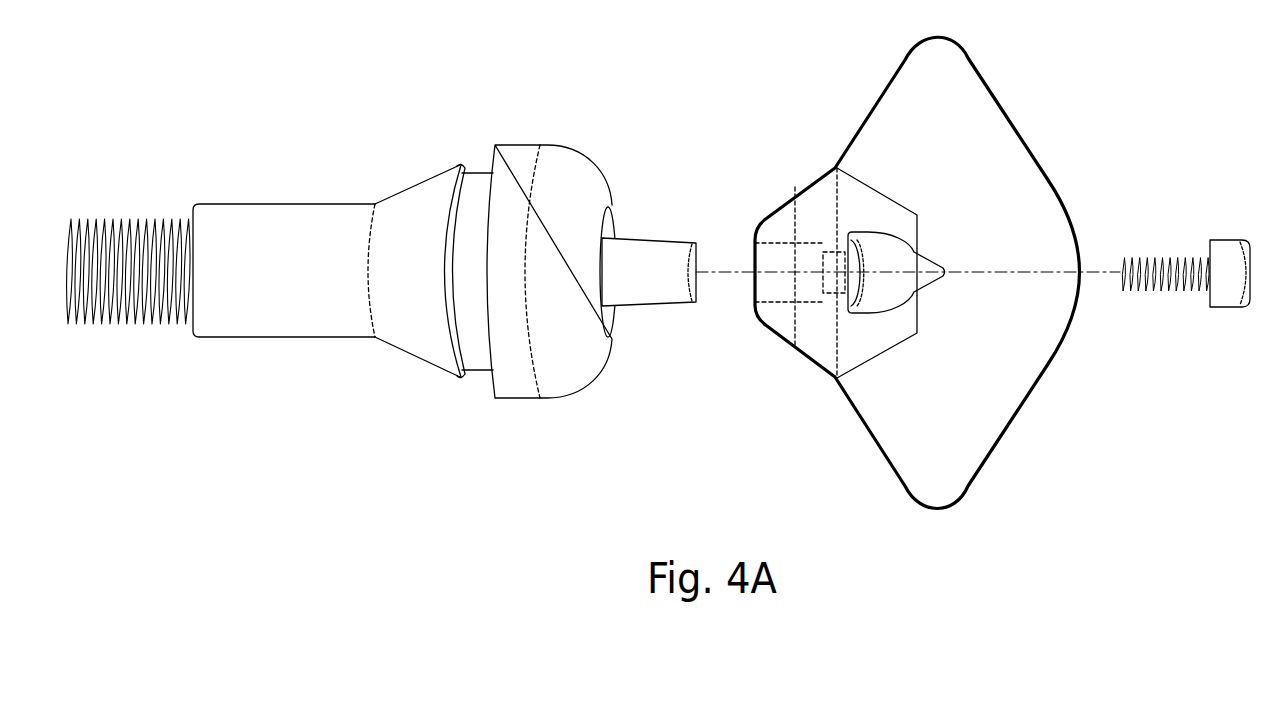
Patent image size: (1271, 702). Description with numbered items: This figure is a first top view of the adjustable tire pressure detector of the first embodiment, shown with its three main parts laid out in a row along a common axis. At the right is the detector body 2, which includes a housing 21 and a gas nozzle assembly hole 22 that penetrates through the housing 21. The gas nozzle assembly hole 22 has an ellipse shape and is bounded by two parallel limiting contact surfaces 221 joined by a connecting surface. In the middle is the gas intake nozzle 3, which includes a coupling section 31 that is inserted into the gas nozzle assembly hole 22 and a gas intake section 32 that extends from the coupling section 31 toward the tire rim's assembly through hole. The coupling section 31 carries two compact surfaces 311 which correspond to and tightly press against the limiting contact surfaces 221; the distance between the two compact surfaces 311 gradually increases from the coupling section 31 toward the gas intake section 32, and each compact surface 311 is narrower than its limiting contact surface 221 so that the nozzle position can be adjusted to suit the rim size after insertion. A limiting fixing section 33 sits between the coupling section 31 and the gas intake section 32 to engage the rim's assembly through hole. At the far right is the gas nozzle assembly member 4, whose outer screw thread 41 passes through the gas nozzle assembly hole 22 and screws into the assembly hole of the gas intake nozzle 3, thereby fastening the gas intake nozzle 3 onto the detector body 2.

The detector body 2 is at (918, 272).
The housing 21 is at (1008, 128).
The gas nozzle assembly hole 22 is at (843, 277).
The limiting contact surface 221 is at (778, 238).
The gas intake nozzle 3 is at (381, 265).
The coupling section 31 is at (649, 272).
The compact surface 311 is at (660, 236).
The gas intake section 32 is at (318, 326).
The limiting fixing section 33 is at (478, 182).
The gas nozzle assembly member 4 is at (1186, 263).
The outer screw thread 41 is at (1158, 292).